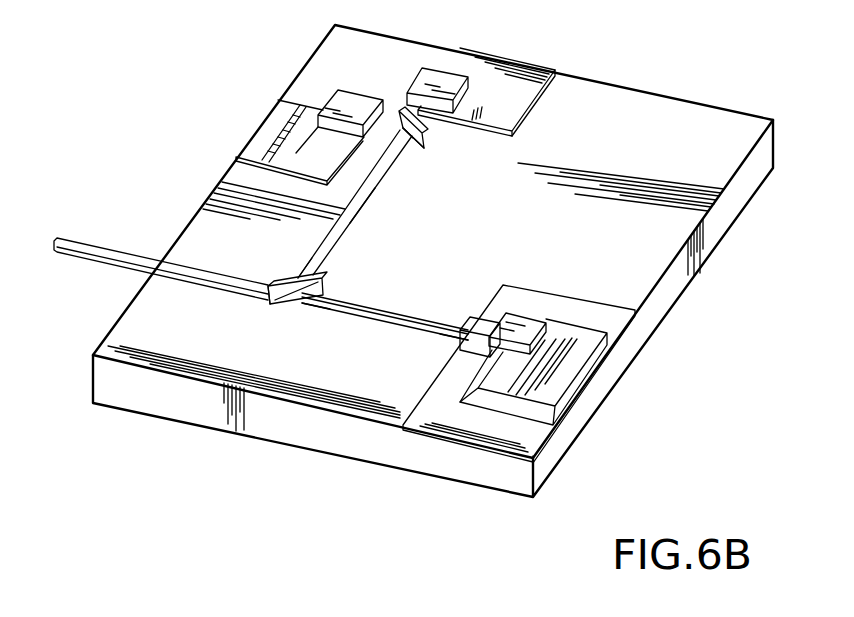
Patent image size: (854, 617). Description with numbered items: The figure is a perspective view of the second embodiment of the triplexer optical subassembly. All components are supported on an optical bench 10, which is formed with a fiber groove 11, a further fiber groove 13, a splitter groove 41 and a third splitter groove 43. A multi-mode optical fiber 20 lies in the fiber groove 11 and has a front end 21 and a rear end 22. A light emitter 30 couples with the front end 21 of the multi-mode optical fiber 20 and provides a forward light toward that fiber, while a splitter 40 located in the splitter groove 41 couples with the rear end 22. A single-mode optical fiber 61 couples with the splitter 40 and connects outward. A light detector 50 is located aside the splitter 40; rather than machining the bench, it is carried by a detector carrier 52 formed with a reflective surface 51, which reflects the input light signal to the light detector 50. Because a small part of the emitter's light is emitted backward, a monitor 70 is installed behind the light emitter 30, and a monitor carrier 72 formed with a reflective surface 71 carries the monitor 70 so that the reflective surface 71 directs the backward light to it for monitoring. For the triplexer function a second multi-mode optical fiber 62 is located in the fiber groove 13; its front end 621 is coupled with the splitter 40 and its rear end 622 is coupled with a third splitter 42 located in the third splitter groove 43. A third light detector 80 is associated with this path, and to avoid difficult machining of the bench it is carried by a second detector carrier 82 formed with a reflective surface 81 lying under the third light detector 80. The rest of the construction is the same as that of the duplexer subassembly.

The optical bench 10 is at (625, 345).
The fiber groove 11 is at (382, 321).
The fiber groove 13 is at (370, 211).
The multi-mode optical fiber 20 is at (398, 310).
The front end 21 is at (445, 343).
The rear end 22 is at (304, 314).
The light emitter 30 is at (483, 320).
The splitter 40 is at (292, 282).
The splitter groove 41 is at (266, 301).
The third splitter 42 is at (400, 110).
The third splitter groove 43 is at (426, 148).
The light detector 50 is at (439, 80).
The reflective surface 51 is at (490, 118).
The detector carrier 52 is at (540, 73).
The single-mode optical fiber 61 is at (203, 276).
The second multi-mode optical fiber 62 is at (346, 207).
The front end 621 is at (330, 263).
The rear end 622 is at (419, 151).
The monitor 70 is at (540, 318).
The reflective surface 71 is at (471, 400).
The monitor carrier 72 is at (558, 378).
The third light detector 80 is at (331, 100).
The reflective surface 81 is at (322, 162).
The second detector carrier 82 is at (285, 124).